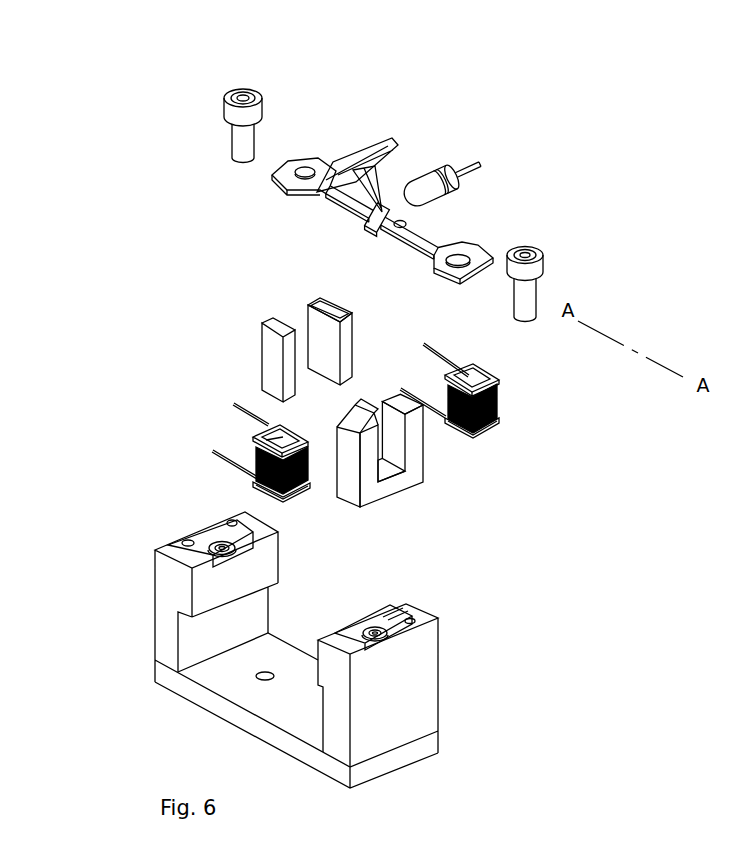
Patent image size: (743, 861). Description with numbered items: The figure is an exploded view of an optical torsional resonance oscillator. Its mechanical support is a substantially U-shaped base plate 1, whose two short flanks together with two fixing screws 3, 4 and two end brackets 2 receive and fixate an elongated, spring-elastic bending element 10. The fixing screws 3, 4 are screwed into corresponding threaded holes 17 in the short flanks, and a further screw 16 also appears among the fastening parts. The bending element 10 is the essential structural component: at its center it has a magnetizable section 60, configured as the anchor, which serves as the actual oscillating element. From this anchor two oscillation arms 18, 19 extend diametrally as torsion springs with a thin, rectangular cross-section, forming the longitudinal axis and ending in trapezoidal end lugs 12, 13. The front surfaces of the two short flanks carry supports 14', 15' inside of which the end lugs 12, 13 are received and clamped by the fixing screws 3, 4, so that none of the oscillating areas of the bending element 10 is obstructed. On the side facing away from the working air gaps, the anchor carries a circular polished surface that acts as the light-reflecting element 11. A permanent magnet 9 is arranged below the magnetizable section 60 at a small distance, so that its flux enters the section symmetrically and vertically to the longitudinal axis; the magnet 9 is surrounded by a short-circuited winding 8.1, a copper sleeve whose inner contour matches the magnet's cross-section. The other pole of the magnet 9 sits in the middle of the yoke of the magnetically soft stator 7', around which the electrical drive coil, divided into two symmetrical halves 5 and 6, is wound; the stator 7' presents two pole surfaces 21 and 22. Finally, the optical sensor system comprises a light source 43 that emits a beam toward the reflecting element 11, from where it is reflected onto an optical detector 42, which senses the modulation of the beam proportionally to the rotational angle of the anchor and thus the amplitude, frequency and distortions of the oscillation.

The base plate 1 is at (250, 700).
The end bracket 2 is at (165, 603).
The fixing screw 3 is at (243, 92).
The fixing screw 4 is at (525, 249).
The first drive coil 5 is at (255, 483).
The second drive coil 6 is at (498, 425).
The stator 7' is at (455, 430).
The short-circuited winding 8.1 is at (318, 320).
The magnet 9 is at (273, 358).
The bending element 10 is at (473, 297).
The light-reflecting element 11 is at (400, 222).
The end lug 12 is at (315, 160).
The end lug 13 is at (488, 245).
The support 14' is at (124, 541).
The support 15' is at (479, 623).
The screw 16 is at (256, 446).
The thread hole 17 is at (222, 545).
The oscillation arm 18 is at (368, 224).
The oscillation arm 19 is at (476, 247).
The pole surface 21 is at (366, 404).
The pole surface 22 is at (397, 400).
The detector 42 is at (364, 150).
The light source 43 is at (423, 182).
The magnetizable section 60 is at (364, 226).